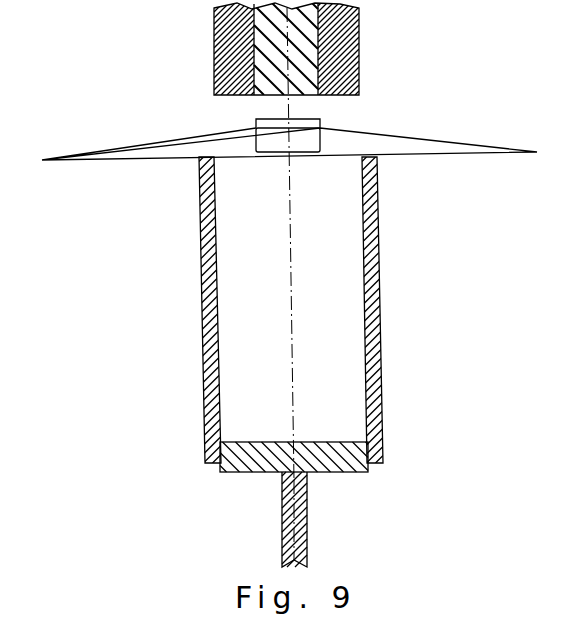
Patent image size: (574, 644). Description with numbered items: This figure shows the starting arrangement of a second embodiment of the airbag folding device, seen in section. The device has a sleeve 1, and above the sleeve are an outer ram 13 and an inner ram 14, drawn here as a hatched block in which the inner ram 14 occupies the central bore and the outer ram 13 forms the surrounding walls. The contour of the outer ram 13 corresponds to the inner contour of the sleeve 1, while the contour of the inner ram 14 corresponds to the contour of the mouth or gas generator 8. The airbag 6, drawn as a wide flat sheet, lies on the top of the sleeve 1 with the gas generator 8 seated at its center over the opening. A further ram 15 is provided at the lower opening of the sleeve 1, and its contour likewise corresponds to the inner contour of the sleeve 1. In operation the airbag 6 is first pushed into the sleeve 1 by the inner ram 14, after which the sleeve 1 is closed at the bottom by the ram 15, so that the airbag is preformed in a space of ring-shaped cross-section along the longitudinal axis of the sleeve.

The sleeve 1 is at (378, 326).
The airbag 6 is at (459, 138).
The gas generator 8 is at (268, 138).
The outer ram 13 is at (343, 52).
The inner ram 14 is at (272, 65).
The ram 15 is at (245, 473).